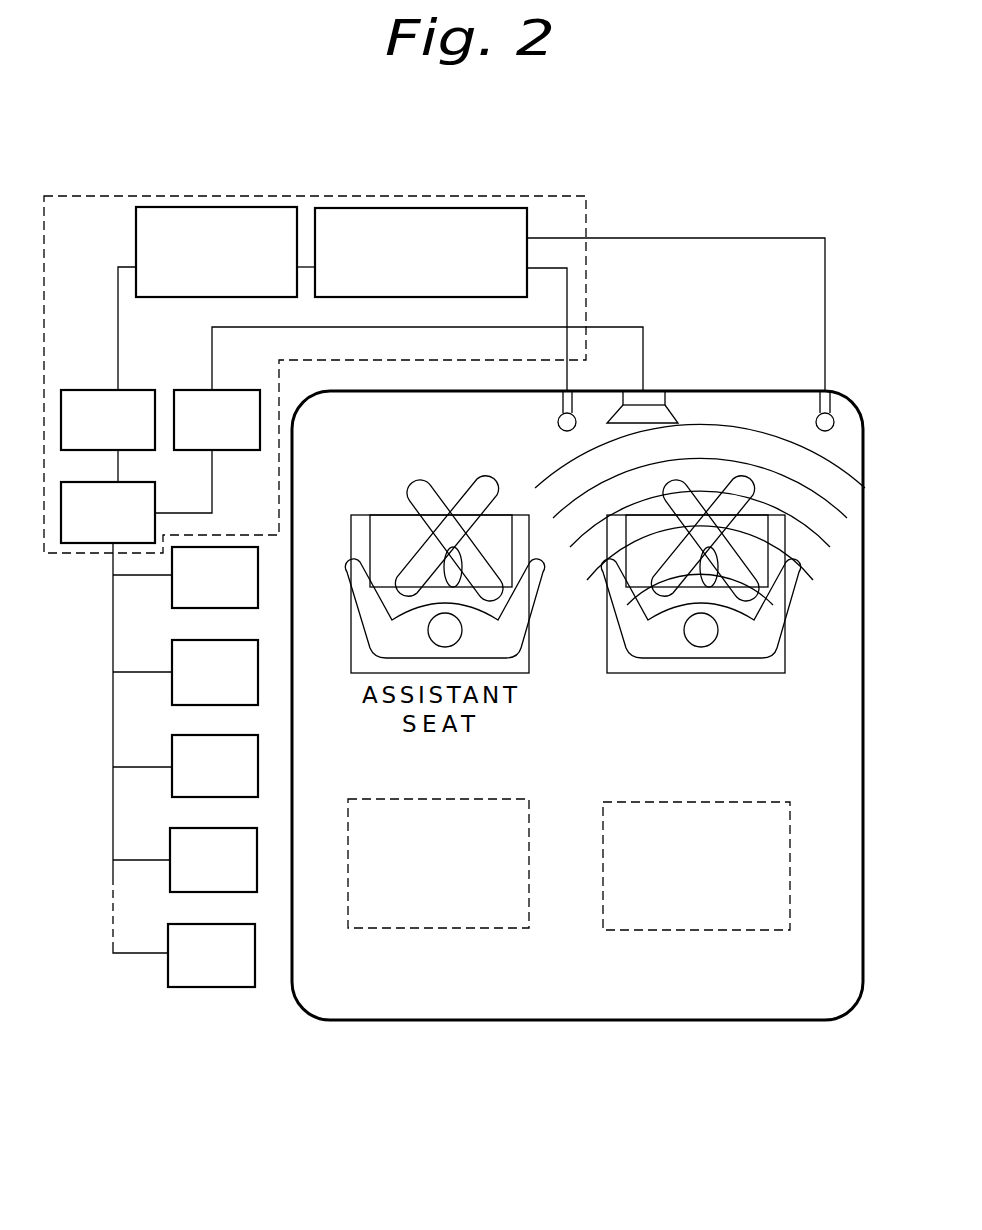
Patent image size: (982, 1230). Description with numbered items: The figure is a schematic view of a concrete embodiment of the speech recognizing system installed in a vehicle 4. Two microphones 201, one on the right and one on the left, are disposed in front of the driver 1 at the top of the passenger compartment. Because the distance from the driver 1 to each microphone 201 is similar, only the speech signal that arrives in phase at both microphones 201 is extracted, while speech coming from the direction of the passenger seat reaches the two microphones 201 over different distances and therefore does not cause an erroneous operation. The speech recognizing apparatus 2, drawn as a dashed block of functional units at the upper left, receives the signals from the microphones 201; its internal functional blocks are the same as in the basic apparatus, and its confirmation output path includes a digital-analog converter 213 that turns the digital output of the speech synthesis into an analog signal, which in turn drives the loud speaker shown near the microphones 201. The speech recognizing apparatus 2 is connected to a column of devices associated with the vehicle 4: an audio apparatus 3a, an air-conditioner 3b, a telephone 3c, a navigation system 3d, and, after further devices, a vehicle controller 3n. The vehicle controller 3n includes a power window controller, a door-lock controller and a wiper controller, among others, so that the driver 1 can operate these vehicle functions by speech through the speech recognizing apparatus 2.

The driver 1 is at (768, 643).
The speech recognizing apparatus 2 is at (60, 553).
The audio apparatus 3a is at (172, 590).
The air-conditioner 3b is at (172, 687).
The telephone 3c is at (172, 782).
The navigation system 3d is at (170, 875).
The vehicle controller 3n is at (168, 973).
The vehicle 4 is at (665, 1020).
The microphone 201 is at (558, 420).
The digital-analog converter 213 is at (672, 410).